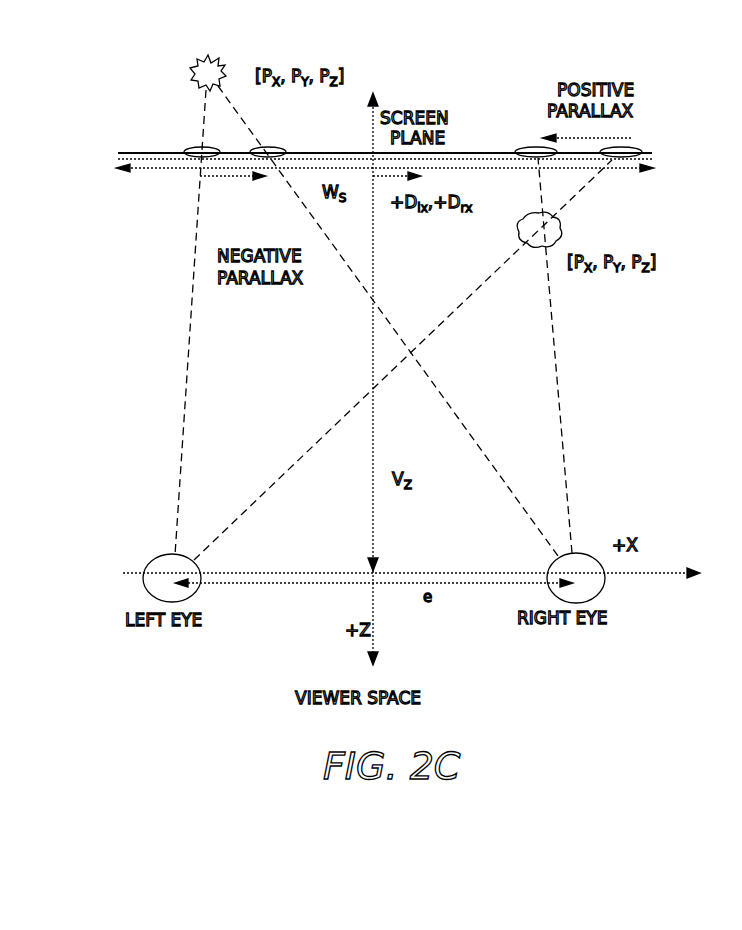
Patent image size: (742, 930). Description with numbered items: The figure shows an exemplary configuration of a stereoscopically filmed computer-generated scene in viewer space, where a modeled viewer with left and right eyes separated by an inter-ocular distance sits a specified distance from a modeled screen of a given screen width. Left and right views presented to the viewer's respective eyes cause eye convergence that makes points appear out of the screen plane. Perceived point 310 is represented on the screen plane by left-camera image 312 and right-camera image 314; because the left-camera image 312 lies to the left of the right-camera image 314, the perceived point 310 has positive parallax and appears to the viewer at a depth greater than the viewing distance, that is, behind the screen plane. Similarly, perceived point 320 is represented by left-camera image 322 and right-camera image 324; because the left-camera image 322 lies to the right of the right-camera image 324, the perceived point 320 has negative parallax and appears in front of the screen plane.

The perceived point 310 is at (190, 73).
The left-camera image 312 is at (190, 148).
The right-camera image 314 is at (278, 148).
The perceived point 320 is at (561, 229).
The left-camera image 322 is at (640, 148).
The right-camera image 324 is at (527, 148).